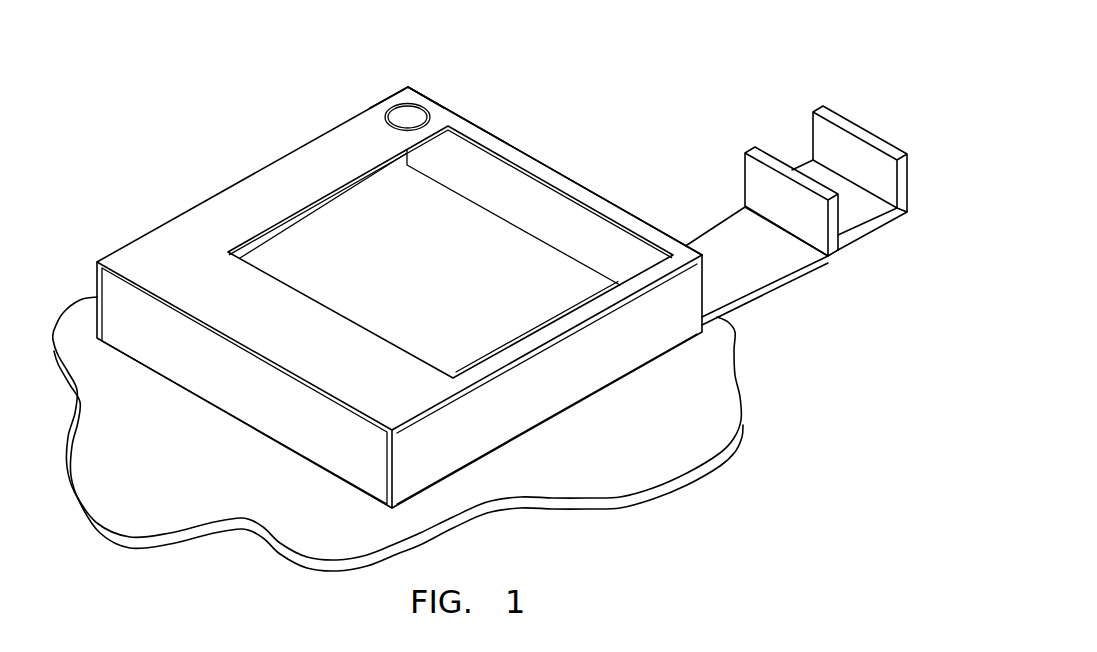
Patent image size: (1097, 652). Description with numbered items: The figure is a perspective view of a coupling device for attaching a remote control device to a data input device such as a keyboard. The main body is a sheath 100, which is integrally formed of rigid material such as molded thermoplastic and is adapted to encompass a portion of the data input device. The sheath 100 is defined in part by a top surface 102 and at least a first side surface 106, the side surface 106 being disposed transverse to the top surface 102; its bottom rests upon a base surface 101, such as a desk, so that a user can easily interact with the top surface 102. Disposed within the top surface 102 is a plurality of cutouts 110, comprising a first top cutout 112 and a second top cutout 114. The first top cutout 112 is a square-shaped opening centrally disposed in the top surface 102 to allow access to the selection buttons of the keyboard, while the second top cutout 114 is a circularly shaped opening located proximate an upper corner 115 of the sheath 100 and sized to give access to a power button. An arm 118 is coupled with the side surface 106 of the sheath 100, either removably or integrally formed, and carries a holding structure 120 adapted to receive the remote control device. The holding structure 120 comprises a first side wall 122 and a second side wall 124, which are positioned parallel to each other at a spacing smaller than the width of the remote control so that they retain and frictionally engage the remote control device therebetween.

The sheath 100 is at (399, 306).
The base surface 101 is at (723, 412).
The top surface 102 is at (331, 143).
The first side surface 106 is at (633, 217).
The cutouts 110 is at (478, 106).
The first top cutout 112 is at (548, 182).
The second top cutout 114 is at (423, 107).
The upper corner 115 is at (408, 86).
The arm 118 is at (755, 292).
The holding structure 120 is at (828, 175).
The first side wall 122 is at (905, 175).
The second side wall 124 is at (835, 226).